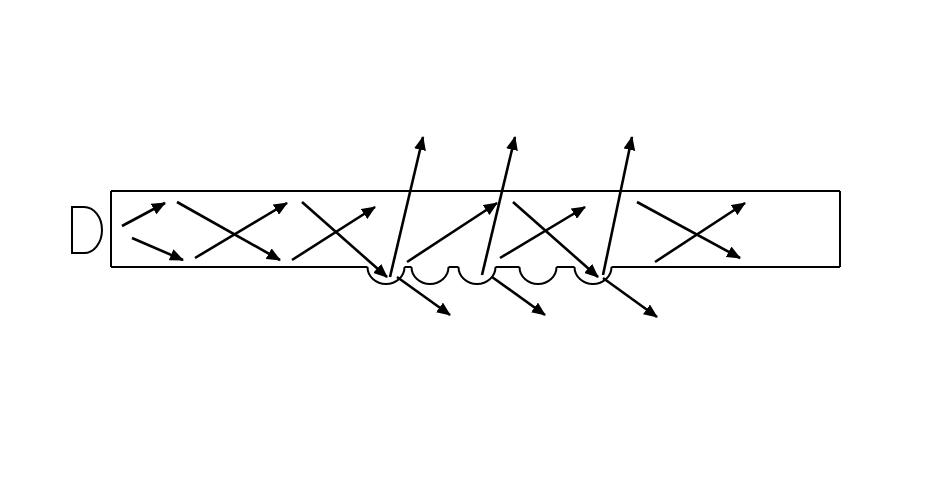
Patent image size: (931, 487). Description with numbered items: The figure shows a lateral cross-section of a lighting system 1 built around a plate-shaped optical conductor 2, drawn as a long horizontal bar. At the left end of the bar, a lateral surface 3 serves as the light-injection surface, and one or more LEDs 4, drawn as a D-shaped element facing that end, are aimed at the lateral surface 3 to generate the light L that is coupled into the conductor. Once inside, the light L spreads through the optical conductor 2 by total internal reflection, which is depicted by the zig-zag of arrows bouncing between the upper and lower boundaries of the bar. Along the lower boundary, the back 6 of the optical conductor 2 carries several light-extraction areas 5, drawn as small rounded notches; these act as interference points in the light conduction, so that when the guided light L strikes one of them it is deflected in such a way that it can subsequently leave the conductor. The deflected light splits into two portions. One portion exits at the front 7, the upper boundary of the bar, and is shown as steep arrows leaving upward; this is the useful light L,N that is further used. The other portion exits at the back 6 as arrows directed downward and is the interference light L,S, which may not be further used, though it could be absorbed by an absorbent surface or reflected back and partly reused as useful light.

The lighting system 1 is at (135, 113).
The optical conductor 2 is at (248, 190).
The lateral surface 3 is at (111, 258).
The LED 4 is at (72, 232).
The light-extraction area 5 is at (380, 284).
The back 6 is at (803, 268).
The front 7 is at (803, 189).
The light L is at (150, 245).
The useful light L,N is at (622, 170).
The interference light L,S is at (436, 284).